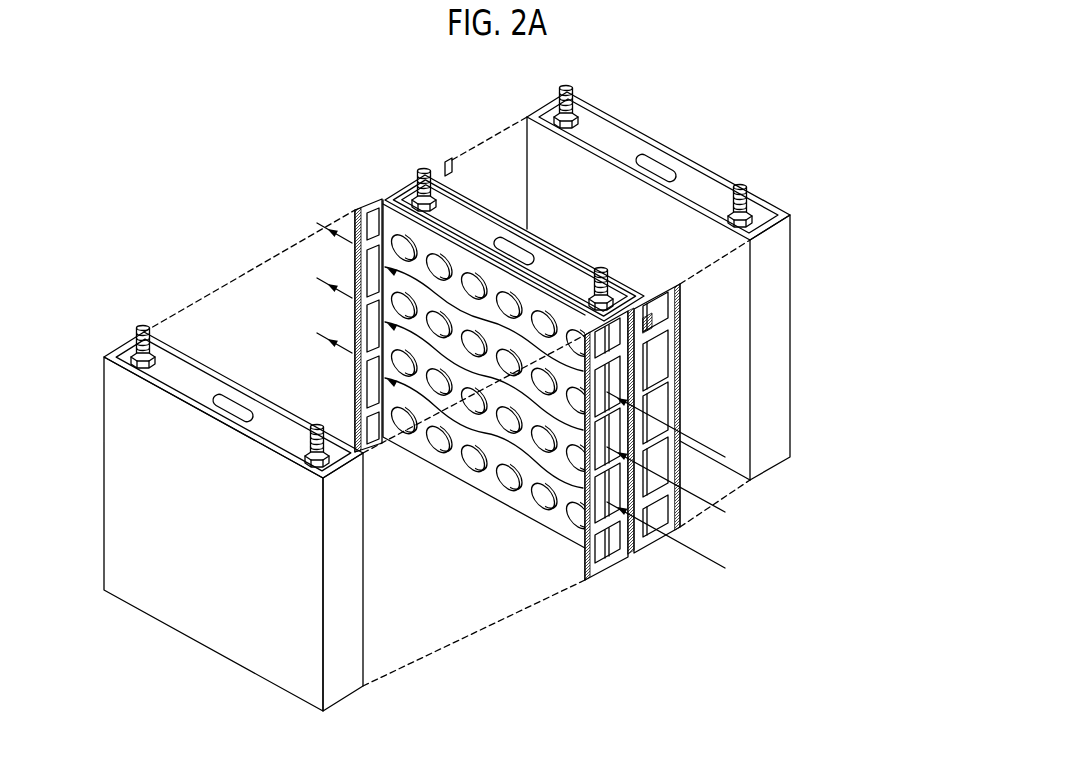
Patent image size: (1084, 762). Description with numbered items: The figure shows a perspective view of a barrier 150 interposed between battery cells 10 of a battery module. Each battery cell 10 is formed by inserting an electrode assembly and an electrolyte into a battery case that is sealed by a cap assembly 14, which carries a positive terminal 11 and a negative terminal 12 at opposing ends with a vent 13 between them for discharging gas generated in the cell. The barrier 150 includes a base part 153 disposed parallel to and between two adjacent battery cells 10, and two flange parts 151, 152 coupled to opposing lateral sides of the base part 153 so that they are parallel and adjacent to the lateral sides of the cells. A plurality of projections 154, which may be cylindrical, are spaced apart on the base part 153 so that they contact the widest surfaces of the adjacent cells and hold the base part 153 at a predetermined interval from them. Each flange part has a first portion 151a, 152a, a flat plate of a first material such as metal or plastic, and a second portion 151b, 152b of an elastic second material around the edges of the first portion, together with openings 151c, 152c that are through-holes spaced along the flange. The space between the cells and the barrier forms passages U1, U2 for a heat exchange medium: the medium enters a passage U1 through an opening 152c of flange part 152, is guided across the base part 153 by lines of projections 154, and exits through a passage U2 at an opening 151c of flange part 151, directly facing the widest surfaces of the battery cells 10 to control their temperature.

The battery cell 10 is at (778, 441).
The positive terminal 11 is at (424, 165).
The negative terminal 12 is at (602, 266).
The vent 13 is at (520, 250).
The cap assembly 14 is at (468, 215).
The barrier 150 is at (741, 457).
The flange part 151 is at (326, 277).
The first portion 151a is at (375, 205).
The second portion 151b is at (353, 228).
The opening 151c is at (372, 217).
The flange part 152 is at (741, 421).
The first portion 152a is at (654, 323).
The second portion 152b is at (682, 288).
The opening 152c is at (670, 334).
The base part 153 is at (497, 492).
The projections 154 is at (487, 384).
The passage U1 is at (680, 480).
The passage U2 is at (317, 288).